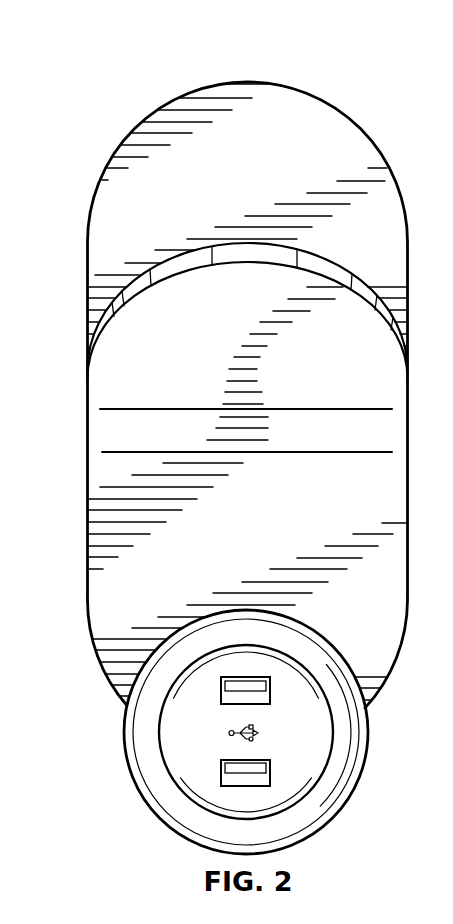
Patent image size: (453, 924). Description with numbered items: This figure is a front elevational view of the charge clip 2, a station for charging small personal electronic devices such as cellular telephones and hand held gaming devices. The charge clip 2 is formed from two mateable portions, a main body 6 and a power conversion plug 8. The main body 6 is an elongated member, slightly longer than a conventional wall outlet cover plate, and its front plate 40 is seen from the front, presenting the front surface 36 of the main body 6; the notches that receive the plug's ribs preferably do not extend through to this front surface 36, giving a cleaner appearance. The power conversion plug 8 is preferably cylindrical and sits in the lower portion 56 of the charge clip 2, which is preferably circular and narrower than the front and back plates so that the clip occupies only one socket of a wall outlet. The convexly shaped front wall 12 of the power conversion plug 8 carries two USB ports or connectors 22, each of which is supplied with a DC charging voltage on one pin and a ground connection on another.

The charge clip 2 is at (113, 63).
The main body 6 is at (59, 223).
The front plate 40 is at (110, 390).
The front surface 36 is at (108, 603).
The lower portion 56 is at (172, 829).
The power conversion plug 8 is at (178, 786).
The front wall 12 is at (176, 760).
The USB ports or connectors 22 is at (221, 697).